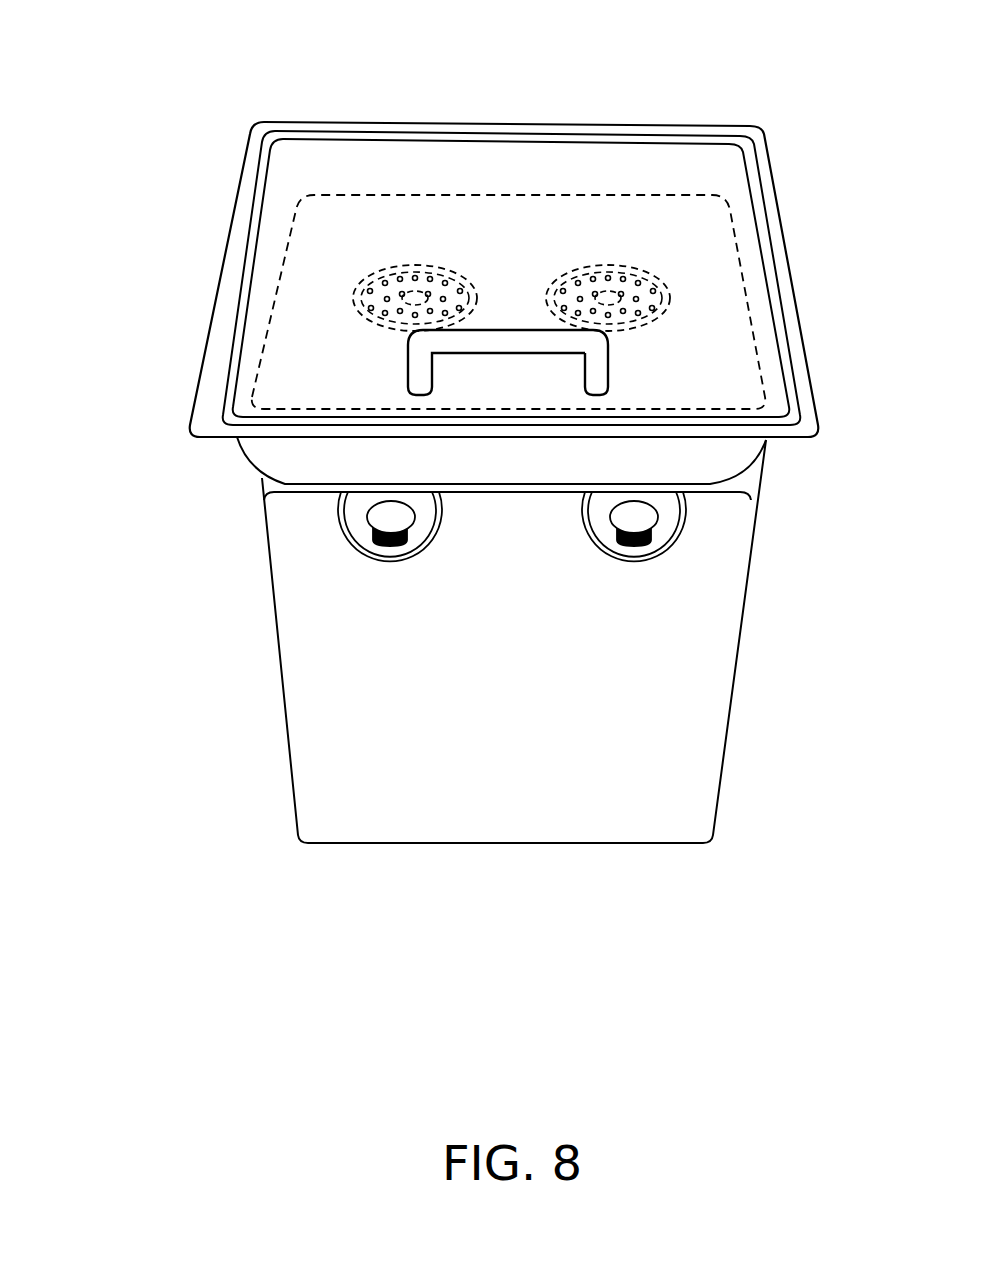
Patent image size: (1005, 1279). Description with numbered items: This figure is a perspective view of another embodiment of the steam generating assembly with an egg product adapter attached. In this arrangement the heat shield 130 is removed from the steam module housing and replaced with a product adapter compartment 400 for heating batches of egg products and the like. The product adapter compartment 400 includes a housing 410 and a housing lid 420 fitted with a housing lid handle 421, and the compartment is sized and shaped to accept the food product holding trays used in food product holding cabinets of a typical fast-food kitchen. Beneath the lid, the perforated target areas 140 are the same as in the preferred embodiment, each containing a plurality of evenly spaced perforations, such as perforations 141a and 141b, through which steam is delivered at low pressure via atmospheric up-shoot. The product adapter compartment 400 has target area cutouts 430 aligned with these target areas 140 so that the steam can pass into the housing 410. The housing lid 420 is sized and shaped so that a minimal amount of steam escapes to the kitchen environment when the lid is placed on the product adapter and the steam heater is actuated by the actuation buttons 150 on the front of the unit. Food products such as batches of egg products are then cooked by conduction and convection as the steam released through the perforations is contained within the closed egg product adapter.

The product adapter compartment 400 is at (762, 124).
The housing lid 420 is at (715, 332).
The housing 410 is at (413, 382).
The housing lid handle 421 is at (597, 378).
The perforated target area 140 is at (419, 166).
The perforation 141a is at (385, 283).
The perforation 141b is at (375, 300).
The target area cutout 430 is at (388, 270).
The heat shield 130 is at (270, 482).
The actuation button 150 is at (392, 518).